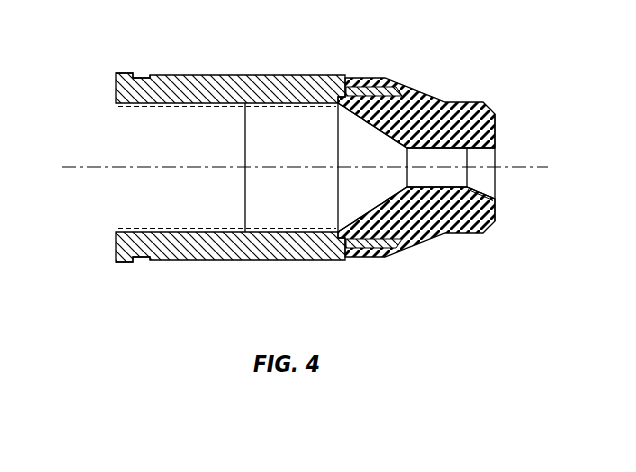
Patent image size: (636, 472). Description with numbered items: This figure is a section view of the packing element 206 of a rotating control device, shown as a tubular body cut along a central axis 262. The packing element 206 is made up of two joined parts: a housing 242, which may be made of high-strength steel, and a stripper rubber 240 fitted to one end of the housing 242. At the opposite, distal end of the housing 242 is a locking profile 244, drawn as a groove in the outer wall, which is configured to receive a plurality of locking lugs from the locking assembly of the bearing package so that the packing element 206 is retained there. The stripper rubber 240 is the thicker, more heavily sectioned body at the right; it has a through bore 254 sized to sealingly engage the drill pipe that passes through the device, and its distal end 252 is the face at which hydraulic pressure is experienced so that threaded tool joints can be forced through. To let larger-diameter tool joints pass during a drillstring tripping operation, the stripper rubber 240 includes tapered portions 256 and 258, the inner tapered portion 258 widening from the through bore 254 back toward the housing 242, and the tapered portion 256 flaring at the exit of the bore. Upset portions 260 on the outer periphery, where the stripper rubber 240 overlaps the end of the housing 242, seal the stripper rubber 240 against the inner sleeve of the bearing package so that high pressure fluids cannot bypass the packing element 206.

The packing element 206 is at (378, 53).
The stripper rubber 240 is at (443, 103).
The housing 242 is at (251, 259).
The locking profile 244 is at (137, 263).
The distal end 252 is at (497, 123).
The through bore 254 is at (468, 152).
The tapered portion 256 is at (495, 198).
The tapered portion 258 is at (367, 216).
The upset portions 260 is at (397, 264).
The central axis 262 is at (533, 166).